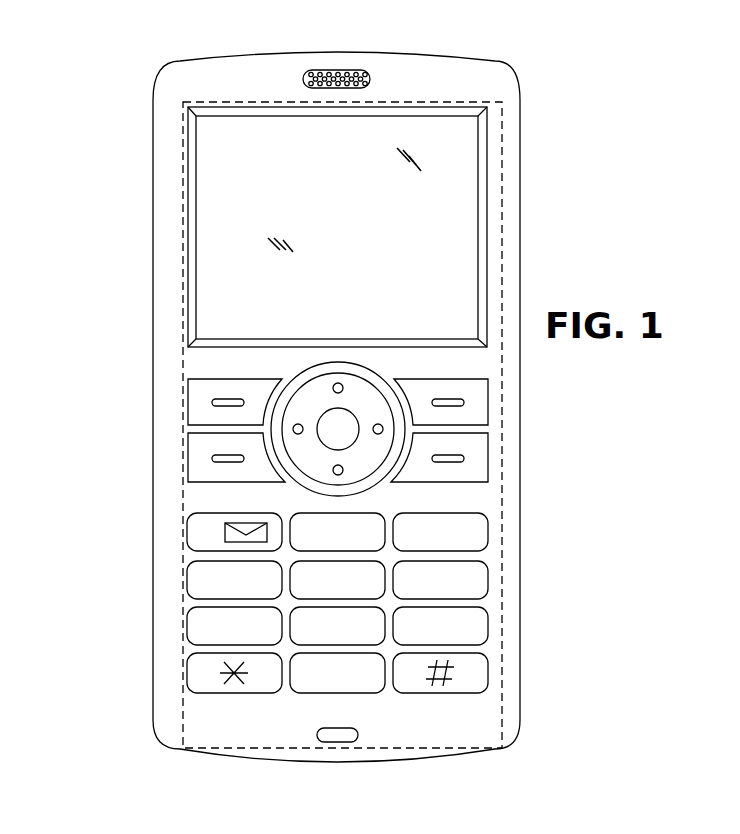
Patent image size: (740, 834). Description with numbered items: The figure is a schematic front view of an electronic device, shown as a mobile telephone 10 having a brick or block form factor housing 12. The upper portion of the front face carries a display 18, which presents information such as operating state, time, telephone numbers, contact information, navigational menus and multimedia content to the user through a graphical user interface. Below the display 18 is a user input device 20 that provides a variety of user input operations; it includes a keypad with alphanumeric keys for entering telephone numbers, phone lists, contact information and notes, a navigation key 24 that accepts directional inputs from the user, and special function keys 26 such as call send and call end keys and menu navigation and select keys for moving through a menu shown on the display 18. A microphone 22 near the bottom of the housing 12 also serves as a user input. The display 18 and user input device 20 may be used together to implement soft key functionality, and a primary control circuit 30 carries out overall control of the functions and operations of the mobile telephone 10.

The mobile telephone 10 is at (142, 76).
The housing 12 is at (520, 76).
The display 18 is at (448, 243).
The user input device 20 is at (183, 502).
The microphone 22 is at (340, 740).
The navigation key 24 is at (368, 478).
The special function keys 26 is at (470, 410).
The primary control circuit 30 is at (340, 70).